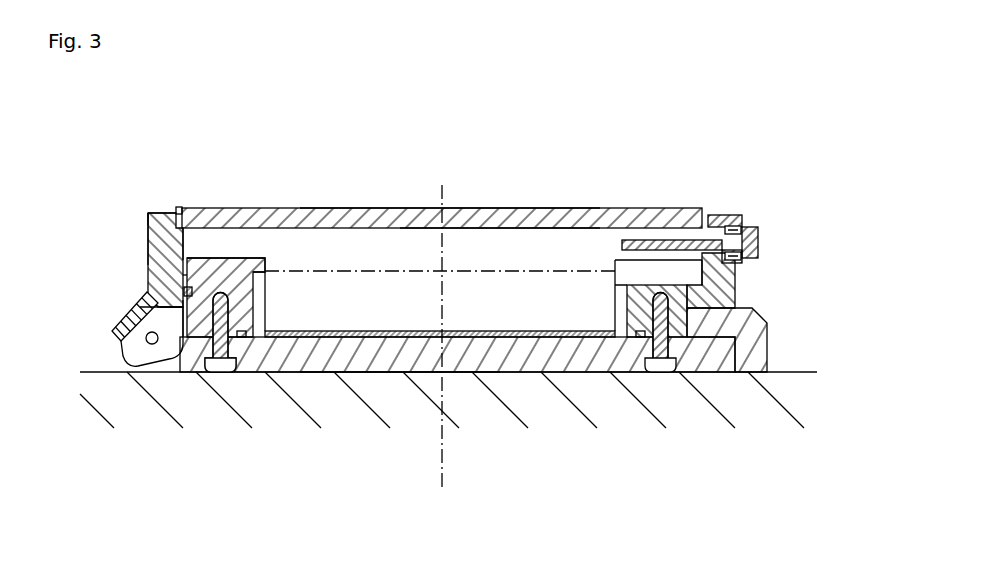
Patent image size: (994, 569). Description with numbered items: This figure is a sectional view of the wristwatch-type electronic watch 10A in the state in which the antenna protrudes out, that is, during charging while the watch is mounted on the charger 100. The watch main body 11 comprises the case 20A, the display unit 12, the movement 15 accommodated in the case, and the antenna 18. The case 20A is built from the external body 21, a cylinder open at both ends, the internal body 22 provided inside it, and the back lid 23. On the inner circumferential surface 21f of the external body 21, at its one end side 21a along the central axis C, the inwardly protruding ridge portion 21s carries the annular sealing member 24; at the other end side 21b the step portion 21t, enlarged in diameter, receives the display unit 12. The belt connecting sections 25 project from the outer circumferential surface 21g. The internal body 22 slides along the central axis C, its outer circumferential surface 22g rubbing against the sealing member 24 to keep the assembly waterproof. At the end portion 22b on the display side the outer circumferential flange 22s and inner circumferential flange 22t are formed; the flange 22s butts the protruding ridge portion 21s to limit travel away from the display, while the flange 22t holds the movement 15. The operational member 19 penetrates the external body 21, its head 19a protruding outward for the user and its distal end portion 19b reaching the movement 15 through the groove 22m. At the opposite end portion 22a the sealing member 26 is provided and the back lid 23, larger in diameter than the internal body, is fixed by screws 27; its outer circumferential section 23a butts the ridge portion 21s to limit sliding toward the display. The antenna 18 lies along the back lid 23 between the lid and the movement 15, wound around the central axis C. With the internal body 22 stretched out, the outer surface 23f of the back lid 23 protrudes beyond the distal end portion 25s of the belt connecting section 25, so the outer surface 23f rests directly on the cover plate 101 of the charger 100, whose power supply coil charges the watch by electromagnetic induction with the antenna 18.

The wristwatch-type electronic watch 10A is at (587, 140).
The watch main body 11 is at (483, 206).
The display unit 12 is at (409, 208).
The movement 15 is at (520, 271).
The antenna 18 is at (513, 340).
The operational member 19 is at (727, 216).
The head 19a is at (759, 244).
The distal end portion 19b is at (630, 240).
The case 20A is at (147, 216).
The external body 21 is at (147, 272).
The one end side 21a is at (160, 308).
The other end side 21b is at (160, 212).
The inner circumferential surface 21f is at (184, 250).
The outer circumferential surface 21g is at (147, 232).
The protruding ridge portion 21s is at (187, 285).
The step portion 21t is at (182, 209).
The internal body 22 is at (230, 268).
The end portion 22a is at (684, 338).
The end portion 22b is at (257, 261).
The outer circumferential surface 22g is at (180, 308).
The groove 22m is at (672, 275).
The outer circumferential flange 22s is at (147, 252).
The inner circumferential flange 22t is at (268, 263).
The back lid 23 is at (353, 372).
The outer circumferential section 23a is at (194, 372).
The outer surface 23f is at (418, 372).
The sealing member 24 is at (184, 292).
The belt connecting section 25 is at (116, 335).
The distal end portion 25s is at (145, 366).
The sealing member 26 is at (640, 337).
The screw 27 is at (220, 372).
The charger 100 is at (777, 372).
The cover plate 101 is at (803, 372).
The central axis C is at (447, 490).